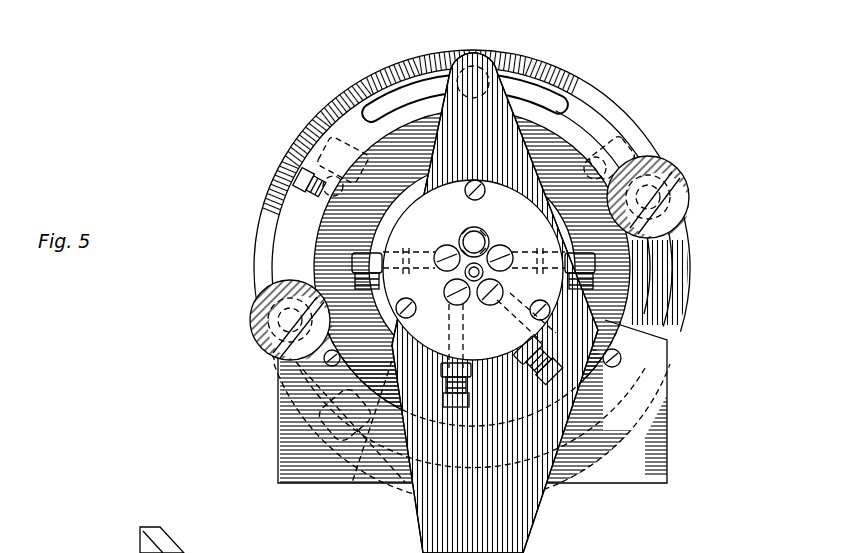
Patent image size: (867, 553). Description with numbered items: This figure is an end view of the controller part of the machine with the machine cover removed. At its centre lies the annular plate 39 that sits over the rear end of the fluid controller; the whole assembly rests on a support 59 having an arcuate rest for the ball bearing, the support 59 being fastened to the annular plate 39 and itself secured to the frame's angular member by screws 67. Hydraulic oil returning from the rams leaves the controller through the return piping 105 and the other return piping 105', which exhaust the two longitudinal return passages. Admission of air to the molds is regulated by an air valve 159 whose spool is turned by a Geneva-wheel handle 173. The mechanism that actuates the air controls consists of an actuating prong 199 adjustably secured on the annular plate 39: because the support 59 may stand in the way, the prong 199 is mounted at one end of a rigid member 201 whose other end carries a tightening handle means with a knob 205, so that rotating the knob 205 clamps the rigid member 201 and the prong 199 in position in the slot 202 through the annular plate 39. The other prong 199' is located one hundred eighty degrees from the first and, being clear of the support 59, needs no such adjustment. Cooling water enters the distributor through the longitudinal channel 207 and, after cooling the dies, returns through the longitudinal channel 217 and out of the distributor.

The annular plate 39 is at (586, 81).
The support 59 is at (625, 468).
The screws 67 is at (414, 540).
The return piping 105 is at (502, 401).
The return piping 105' is at (346, 434).
The air valve 159 is at (304, 190).
The Geneva-wheel handle 173 is at (318, 165).
The actuating prong 199 is at (260, 331).
The prong 199' is at (668, 177).
The rigid member 201 is at (292, 388).
The slot 202 is at (399, 93).
The knob 205 is at (251, 315).
The longitudinal channel 207 is at (356, 261).
The longitudinal channel 217 is at (607, 266).